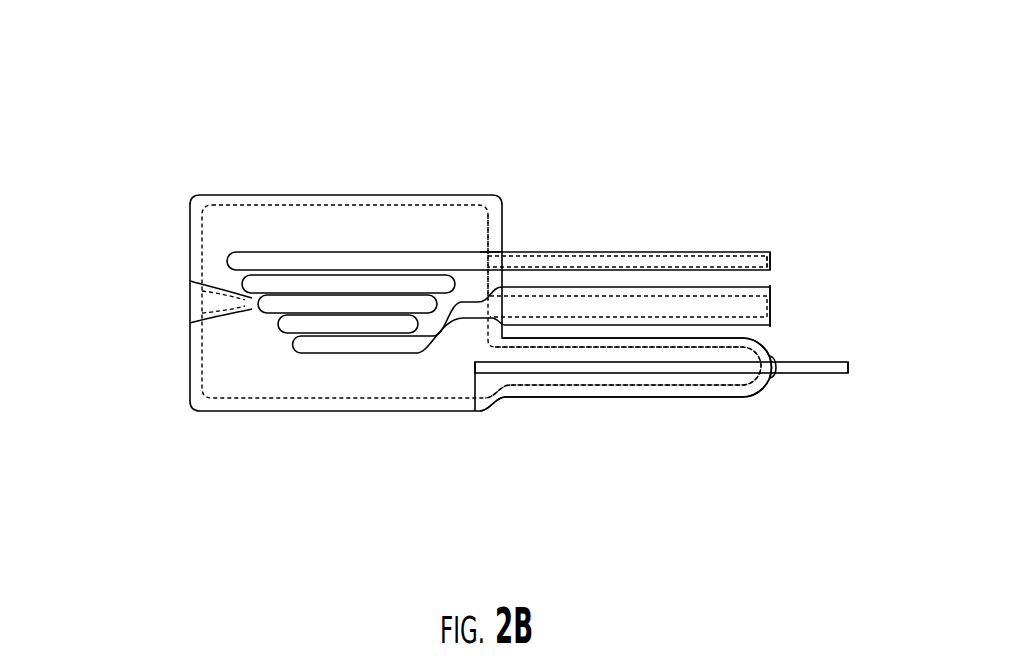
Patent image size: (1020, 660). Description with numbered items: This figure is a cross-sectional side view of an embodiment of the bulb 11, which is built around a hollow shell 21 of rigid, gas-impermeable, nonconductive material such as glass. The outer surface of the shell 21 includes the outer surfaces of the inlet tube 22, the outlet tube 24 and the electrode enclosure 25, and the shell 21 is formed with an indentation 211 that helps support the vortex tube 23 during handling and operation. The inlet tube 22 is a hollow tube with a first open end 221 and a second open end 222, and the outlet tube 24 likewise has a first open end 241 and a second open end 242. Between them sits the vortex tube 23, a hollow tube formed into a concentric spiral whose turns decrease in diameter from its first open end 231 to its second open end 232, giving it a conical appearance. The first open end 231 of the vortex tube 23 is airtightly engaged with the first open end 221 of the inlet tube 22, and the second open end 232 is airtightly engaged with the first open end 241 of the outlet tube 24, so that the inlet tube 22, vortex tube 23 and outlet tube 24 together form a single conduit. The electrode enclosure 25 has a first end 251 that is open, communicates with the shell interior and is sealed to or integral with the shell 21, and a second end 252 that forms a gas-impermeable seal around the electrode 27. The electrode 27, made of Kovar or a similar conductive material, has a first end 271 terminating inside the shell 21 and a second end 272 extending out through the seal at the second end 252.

The bulb 11 is at (176, 159).
The shell 21 is at (188, 217).
The indentation 211 is at (200, 303).
The inlet tube 22 is at (635, 253).
The first open end 221 is at (488, 256).
The second open end 222 is at (770, 263).
The vortex tube 23 is at (367, 277).
The first open end 231 is at (487, 254).
The second open end 232 is at (478, 320).
The outlet tube 24 is at (760, 327).
The first open end 241 is at (478, 320).
The second open end 242 is at (772, 301).
The electrode enclosure 25 is at (580, 398).
The first end 251 is at (500, 400).
The second end 252 is at (772, 376).
The electrode 27 is at (800, 374).
The first end 271 is at (855, 373).
The second end 272 is at (475, 365).